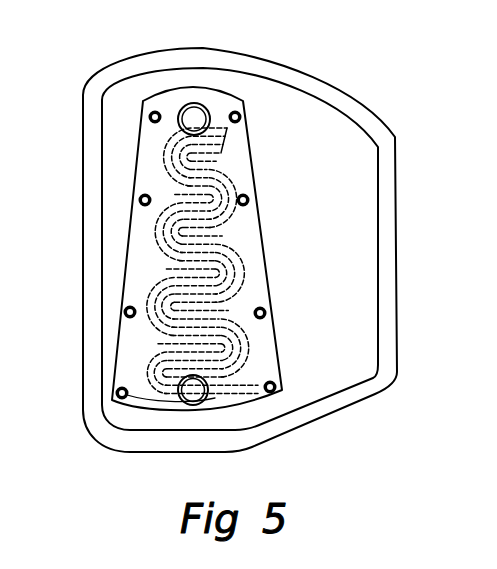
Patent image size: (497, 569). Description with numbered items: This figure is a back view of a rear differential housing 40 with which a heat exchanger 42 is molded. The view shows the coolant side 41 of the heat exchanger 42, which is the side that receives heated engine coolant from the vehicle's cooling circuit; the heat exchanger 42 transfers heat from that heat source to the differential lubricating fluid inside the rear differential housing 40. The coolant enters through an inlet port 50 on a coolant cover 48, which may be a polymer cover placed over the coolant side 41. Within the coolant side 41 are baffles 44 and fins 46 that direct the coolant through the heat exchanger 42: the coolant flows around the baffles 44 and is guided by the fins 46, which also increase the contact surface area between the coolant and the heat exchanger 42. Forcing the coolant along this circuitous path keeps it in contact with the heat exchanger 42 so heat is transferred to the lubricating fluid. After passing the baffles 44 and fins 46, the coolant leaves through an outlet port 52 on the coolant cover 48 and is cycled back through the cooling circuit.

The rear differential housing 40 is at (330, 78).
The coolant side 41 is at (166, 155).
The heat exchanger 42 is at (153, 165).
The baffles 44 is at (140, 289).
The fins 46 is at (152, 240).
The coolant cover 48 is at (227, 165).
The inlet port 50 is at (197, 103).
The outlet port 52 is at (215, 398).